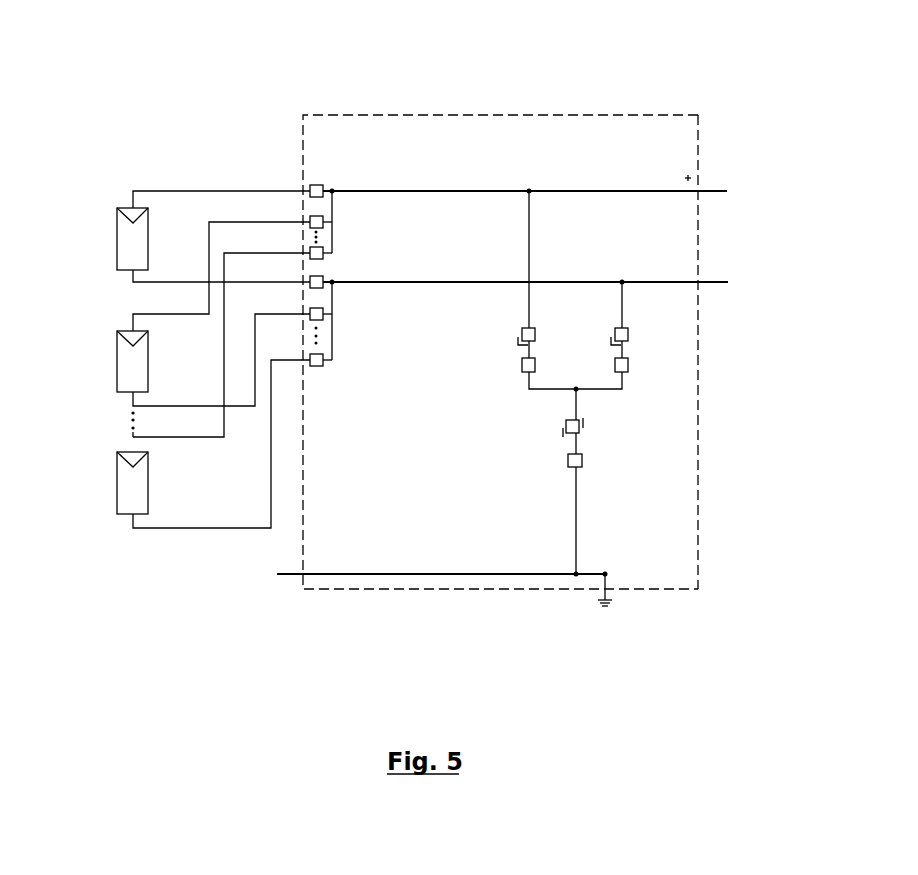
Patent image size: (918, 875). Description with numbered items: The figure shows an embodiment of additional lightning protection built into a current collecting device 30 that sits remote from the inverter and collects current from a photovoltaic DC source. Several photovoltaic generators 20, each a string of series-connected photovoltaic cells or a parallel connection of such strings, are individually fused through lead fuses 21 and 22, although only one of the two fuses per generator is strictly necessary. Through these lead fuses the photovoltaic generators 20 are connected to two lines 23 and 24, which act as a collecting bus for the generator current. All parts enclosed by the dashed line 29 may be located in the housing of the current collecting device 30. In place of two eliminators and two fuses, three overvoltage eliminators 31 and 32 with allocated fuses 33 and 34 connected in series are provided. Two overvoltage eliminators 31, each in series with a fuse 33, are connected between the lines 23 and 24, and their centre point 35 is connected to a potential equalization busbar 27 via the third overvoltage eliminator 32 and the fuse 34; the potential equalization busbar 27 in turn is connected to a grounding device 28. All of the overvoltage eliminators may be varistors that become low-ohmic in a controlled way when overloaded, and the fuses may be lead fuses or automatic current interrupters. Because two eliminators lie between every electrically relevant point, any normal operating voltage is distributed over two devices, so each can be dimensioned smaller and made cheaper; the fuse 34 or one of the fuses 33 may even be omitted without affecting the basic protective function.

The photovoltaic generator 20 is at (108, 252).
The lead fuse 21 is at (316, 185).
The lead fuse 22 is at (321, 367).
The line 23 is at (630, 191).
The line 24 is at (660, 282).
The potential equalization busbar 27 is at (507, 574).
The grounding device 28 is at (616, 607).
The dashed line 29 is at (698, 513).
The current collecting device 30 is at (571, 103).
The overvoltage eliminator 31 is at (522, 333).
The overvoltage eliminator 32 is at (580, 432).
The fuse 33 is at (522, 368).
The fuse 34 is at (583, 463).
The centre point 35 is at (578, 391).